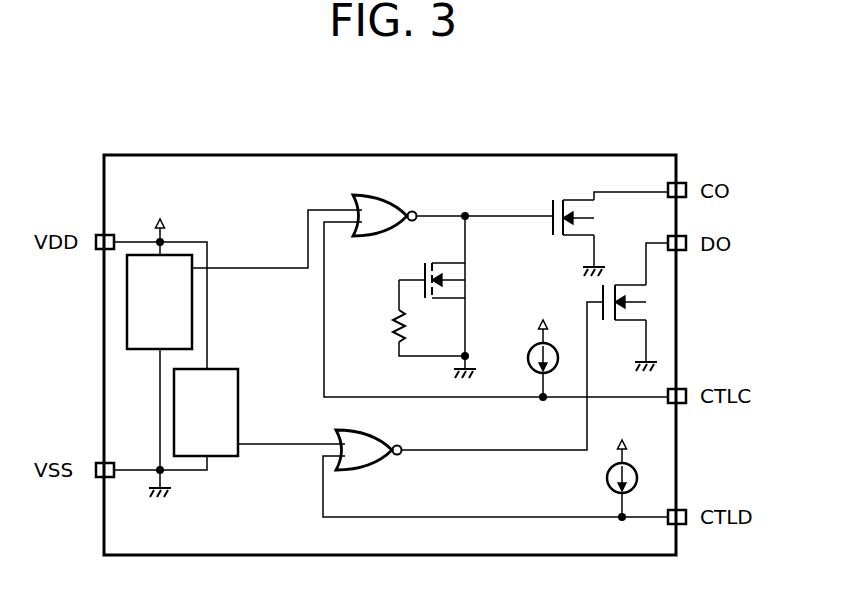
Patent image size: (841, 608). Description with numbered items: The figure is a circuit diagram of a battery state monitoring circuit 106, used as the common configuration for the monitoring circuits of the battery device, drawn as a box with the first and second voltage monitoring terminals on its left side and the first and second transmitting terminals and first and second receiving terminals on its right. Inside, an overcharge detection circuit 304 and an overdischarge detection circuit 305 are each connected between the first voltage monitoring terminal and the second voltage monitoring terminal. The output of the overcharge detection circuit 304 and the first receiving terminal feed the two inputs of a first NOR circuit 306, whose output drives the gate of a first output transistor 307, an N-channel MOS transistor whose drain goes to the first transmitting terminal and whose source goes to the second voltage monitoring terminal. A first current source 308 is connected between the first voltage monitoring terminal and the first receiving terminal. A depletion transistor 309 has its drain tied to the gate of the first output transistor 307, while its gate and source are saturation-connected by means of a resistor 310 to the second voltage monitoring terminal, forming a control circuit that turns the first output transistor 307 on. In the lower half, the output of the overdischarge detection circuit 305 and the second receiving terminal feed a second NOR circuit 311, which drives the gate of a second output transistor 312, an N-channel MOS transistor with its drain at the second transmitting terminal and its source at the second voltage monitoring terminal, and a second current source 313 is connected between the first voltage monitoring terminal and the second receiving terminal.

The battery state monitoring circuit 106 is at (306, 155).
The overcharge detection circuit 304 is at (172, 255).
The overdischarge detection circuit 305 is at (213, 369).
The first NOR circuit 306 is at (392, 208).
The first output transistor 307 is at (588, 200).
The first current source 308 is at (531, 370).
The depletion transistor 309 is at (460, 280).
The resistor 310 is at (389, 317).
The second NOR circuit 311 is at (375, 470).
The second output transistor 312 is at (650, 304).
The second current source 313 is at (606, 476).